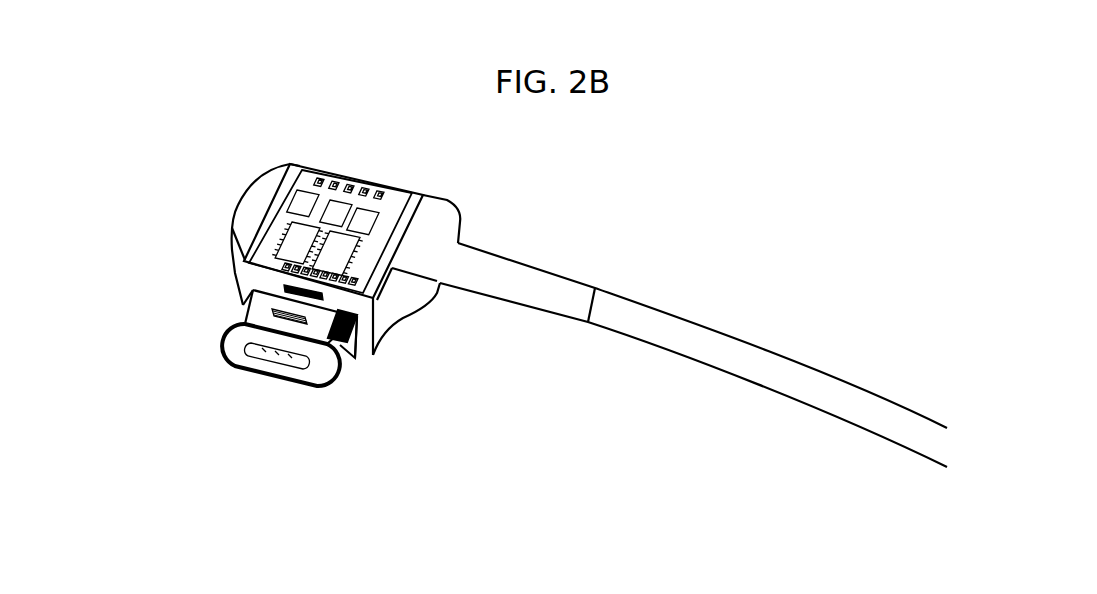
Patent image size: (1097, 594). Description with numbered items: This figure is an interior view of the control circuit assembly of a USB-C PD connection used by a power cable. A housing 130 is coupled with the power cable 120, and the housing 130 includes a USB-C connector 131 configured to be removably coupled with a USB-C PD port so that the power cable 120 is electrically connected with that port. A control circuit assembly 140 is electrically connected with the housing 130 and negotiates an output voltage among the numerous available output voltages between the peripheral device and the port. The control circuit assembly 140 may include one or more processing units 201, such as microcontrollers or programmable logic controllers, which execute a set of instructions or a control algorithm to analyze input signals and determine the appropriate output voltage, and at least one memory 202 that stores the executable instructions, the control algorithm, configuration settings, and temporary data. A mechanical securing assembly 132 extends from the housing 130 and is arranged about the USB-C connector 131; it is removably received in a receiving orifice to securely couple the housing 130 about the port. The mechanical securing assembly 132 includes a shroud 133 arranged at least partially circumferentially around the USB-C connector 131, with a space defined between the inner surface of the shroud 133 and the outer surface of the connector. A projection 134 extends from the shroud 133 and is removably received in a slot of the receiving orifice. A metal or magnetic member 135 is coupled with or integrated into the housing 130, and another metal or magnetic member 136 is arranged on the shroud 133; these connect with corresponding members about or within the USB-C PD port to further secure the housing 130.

The power cable 120 is at (845, 348).
The housing 130 is at (233, 186).
The USB-C connector 131 is at (326, 358).
The mechanical securing assembly 132 is at (222, 357).
The shroud 133 is at (272, 380).
The projection 134 is at (346, 347).
The magnetic member 135 is at (282, 290).
The magnetic member 136 is at (285, 316).
The control circuit assembly 140 is at (292, 164).
The processing unit 201 is at (362, 255).
The memory 202 is at (370, 220).